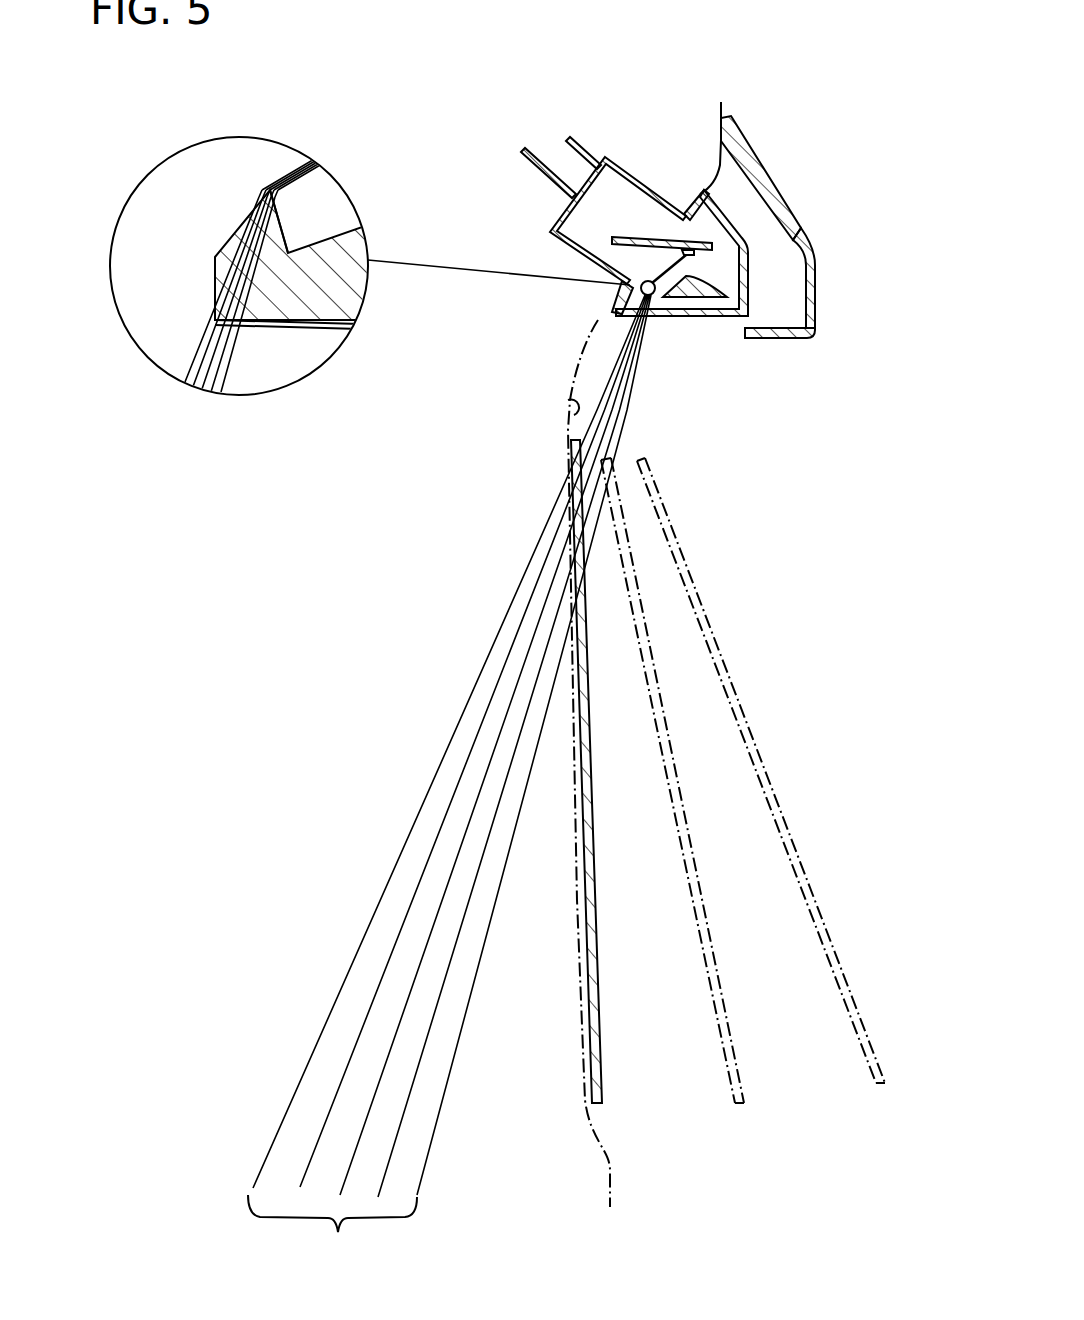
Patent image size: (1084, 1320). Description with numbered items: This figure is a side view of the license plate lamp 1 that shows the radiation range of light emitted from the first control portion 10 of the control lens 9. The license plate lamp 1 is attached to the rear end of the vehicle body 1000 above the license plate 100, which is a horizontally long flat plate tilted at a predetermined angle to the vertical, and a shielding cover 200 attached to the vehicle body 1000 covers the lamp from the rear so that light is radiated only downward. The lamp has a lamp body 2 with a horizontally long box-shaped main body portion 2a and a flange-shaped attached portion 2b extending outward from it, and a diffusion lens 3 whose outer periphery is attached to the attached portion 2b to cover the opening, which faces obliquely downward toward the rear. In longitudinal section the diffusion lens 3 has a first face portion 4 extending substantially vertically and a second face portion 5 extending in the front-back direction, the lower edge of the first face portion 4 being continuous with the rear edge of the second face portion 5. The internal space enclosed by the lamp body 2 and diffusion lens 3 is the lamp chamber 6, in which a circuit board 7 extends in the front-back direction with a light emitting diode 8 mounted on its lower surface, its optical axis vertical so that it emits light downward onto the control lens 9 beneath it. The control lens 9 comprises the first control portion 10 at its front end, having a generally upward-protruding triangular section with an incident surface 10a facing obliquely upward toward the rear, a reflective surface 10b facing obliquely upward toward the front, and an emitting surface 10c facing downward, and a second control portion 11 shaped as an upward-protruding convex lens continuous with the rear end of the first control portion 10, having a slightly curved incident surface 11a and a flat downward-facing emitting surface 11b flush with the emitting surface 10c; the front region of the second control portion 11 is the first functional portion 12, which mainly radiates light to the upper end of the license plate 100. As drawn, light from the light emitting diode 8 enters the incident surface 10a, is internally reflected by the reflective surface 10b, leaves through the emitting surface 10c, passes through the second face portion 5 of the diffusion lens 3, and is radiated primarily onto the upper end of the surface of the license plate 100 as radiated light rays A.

The license plate lamp 1 is at (630, 168).
The lamp body 2 is at (556, 243).
The main body portion 2a is at (560, 246).
The attached portion 2b is at (692, 197).
The diffusion lens 3 is at (747, 200).
The first face portion 4 is at (752, 252).
The second face portion 5 is at (748, 334).
The lamp chamber 6 is at (620, 209).
The circuit board 7 is at (612, 240).
The light emitting diode 8 is at (687, 256).
The control lens 9 is at (345, 224).
The first control portion 10 is at (377, 643).
The incident surface 10a is at (268, 193).
The reflective surface 10b is at (230, 248).
The emitting surface 10c is at (287, 218).
The second control portion 11 is at (363, 222).
The incident surface 11a is at (320, 205).
The emitting surface 11b is at (333, 325).
The first functional portion 12 is at (305, 328).
The license plate 100 is at (603, 1017).
The shielding cover 200 is at (802, 245).
The vehicle body 1000 is at (576, 400).
The radiated light rays A is at (332, 1230).